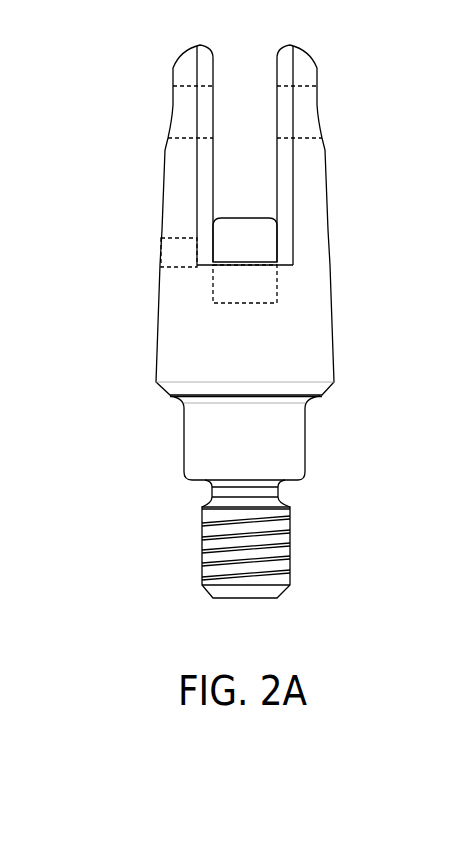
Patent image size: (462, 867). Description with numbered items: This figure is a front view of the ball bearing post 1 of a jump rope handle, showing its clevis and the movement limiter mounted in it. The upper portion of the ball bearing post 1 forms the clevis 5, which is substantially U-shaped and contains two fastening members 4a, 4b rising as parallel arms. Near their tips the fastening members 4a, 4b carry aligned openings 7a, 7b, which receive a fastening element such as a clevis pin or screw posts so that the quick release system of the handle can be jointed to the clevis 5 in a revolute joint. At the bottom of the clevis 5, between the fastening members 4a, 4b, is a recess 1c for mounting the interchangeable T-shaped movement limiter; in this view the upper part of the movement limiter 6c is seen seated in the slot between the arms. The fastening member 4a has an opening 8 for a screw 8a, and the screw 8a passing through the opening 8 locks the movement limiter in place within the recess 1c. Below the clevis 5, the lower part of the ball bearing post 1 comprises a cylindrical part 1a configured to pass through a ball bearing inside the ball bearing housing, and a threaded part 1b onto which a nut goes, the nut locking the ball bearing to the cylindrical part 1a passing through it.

The ball bearing post 1 is at (156, 448).
The cylindrical part 1a is at (270, 535).
The threaded part 1b is at (290, 440).
The recess in the bottom of the clevis 1c is at (258, 283).
The fastening member 4a is at (150, 155).
The fastening member 4b is at (336, 155).
The clevis 5 is at (298, 352).
The upper part of movement limiter 6c is at (257, 238).
The opening for fastening element 7a is at (172, 105).
The opening for fastening element 7b is at (317, 104).
The opening for screw 8 is at (146, 276).
The screw 8a is at (163, 258).